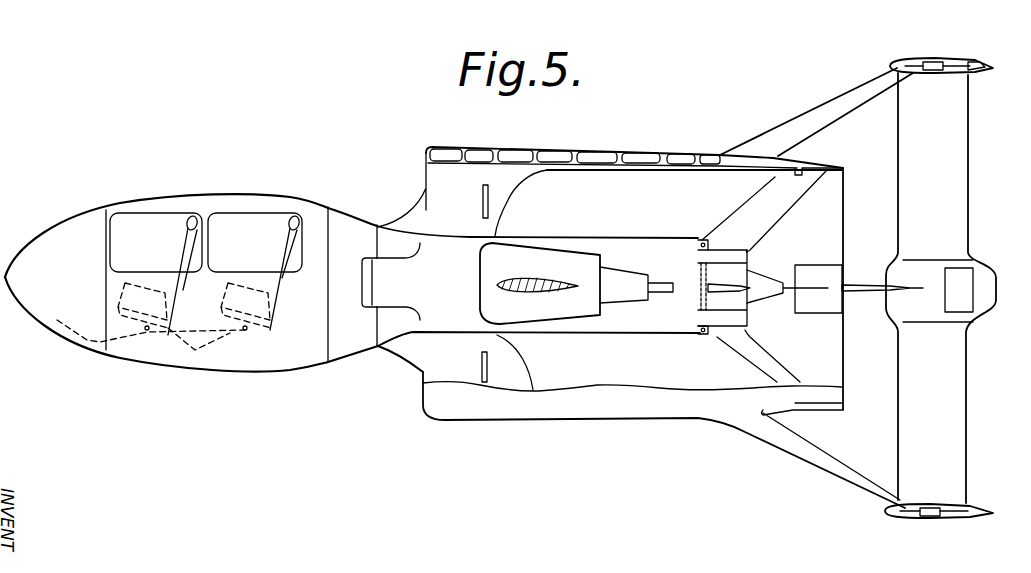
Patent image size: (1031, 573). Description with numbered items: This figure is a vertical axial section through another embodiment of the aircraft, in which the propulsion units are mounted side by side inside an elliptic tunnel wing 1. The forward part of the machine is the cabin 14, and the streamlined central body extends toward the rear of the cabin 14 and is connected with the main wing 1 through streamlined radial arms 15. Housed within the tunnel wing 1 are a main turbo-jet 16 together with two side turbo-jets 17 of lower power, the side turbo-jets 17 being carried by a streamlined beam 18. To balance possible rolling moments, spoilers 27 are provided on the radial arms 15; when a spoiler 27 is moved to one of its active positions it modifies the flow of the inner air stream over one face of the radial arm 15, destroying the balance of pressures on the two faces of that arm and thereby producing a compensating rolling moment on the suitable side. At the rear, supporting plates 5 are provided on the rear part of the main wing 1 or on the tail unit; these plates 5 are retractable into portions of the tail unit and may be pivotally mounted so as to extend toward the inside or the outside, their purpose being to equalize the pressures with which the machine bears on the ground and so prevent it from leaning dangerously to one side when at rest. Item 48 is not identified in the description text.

The main wing 1 is at (653, 152).
The supporting plates 5 is at (955, 283).
The cabin 14 is at (283, 205).
The streamlined radial arms 15 is at (450, 198).
The main turbo-jet 16 is at (647, 258).
The side turbo-jets 17 is at (568, 270).
The streamlined beam 18 is at (520, 278).
The spoilers 27 is at (488, 190).
The horizontal tail plane 48 is at (913, 57).